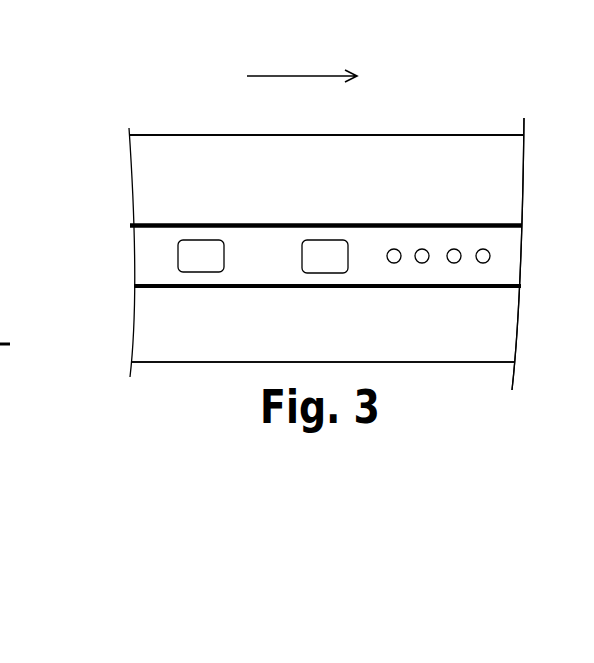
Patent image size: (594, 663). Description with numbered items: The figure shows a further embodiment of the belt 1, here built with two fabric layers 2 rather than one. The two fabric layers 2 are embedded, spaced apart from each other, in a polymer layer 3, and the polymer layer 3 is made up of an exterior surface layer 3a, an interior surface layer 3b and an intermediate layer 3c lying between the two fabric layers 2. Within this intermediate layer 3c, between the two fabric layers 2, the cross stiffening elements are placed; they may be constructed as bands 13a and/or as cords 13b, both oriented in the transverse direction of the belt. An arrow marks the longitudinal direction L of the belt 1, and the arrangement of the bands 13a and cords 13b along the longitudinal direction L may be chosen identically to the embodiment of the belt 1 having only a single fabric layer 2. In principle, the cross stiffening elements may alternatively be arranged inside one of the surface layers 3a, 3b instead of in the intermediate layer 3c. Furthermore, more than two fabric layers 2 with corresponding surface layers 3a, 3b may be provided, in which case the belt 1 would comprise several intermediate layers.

The belt 1 is at (442, 82).
The fabric layers 2 is at (153, 227).
The polymer layer 3 is at (178, 135).
The exterior surface layer 3a is at (142, 182).
The interior surface layer 3b is at (147, 343).
The intermediate layer 3c is at (512, 273).
The bands 13a is at (315, 257).
The cords 13b is at (452, 248).
The longitudinal direction L is at (302, 51).